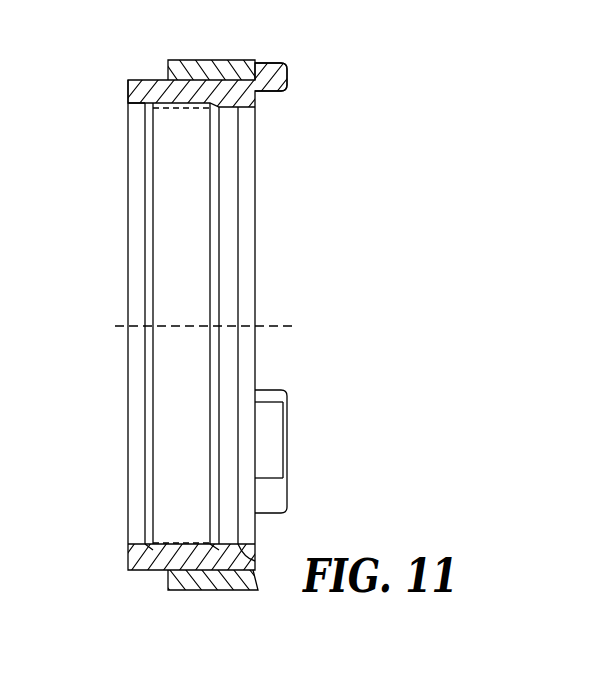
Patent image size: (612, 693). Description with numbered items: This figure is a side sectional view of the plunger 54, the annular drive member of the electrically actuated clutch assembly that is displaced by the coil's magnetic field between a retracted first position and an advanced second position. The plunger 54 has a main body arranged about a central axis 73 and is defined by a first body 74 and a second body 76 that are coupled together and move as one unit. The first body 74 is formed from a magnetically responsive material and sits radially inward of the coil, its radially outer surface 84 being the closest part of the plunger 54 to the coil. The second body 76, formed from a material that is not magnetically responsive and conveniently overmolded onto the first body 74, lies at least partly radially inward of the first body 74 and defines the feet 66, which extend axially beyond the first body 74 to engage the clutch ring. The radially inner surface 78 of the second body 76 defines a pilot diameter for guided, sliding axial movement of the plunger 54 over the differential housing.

The plunger 54 is at (318, 146).
The feet 66 is at (285, 73).
The central axis 73 is at (280, 325).
The first body 74 is at (225, 590).
The second body 76 is at (148, 82).
The radially inner surface 78 is at (232, 257).
The radially outer surface 84 is at (227, 60).